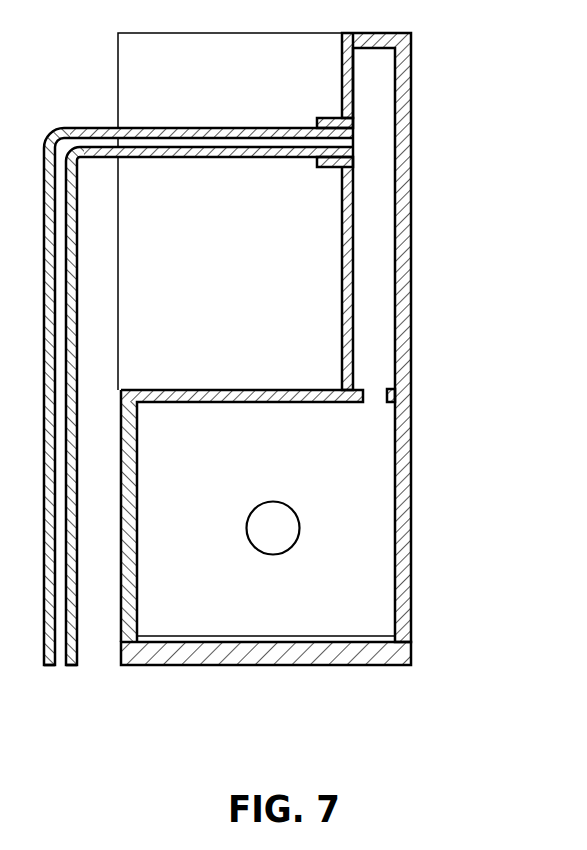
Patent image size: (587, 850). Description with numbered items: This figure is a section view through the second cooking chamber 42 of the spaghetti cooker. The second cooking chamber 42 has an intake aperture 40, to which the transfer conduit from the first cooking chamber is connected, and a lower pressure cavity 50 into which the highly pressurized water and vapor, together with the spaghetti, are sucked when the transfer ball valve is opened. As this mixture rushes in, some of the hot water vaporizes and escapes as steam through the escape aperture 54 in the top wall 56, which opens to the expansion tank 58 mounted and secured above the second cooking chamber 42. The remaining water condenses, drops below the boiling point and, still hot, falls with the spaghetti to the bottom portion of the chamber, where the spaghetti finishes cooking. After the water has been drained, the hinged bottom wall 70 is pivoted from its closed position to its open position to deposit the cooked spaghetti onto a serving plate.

The intake aperture 40 is at (255, 517).
The second cooking chamber 42 is at (378, 488).
The cavity 50 is at (363, 573).
The escape aperture 54 is at (373, 395).
The top wall 56 is at (175, 390).
The expansion tank 58 is at (383, 193).
The hinged bottom wall 70 is at (335, 665).